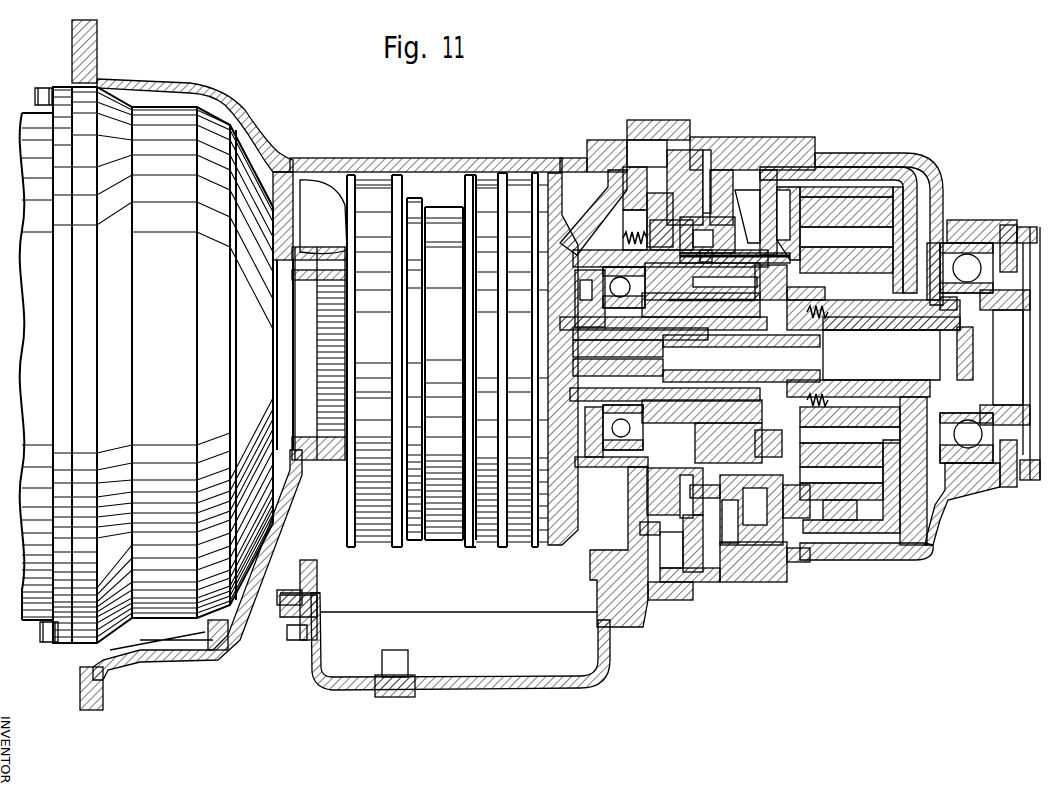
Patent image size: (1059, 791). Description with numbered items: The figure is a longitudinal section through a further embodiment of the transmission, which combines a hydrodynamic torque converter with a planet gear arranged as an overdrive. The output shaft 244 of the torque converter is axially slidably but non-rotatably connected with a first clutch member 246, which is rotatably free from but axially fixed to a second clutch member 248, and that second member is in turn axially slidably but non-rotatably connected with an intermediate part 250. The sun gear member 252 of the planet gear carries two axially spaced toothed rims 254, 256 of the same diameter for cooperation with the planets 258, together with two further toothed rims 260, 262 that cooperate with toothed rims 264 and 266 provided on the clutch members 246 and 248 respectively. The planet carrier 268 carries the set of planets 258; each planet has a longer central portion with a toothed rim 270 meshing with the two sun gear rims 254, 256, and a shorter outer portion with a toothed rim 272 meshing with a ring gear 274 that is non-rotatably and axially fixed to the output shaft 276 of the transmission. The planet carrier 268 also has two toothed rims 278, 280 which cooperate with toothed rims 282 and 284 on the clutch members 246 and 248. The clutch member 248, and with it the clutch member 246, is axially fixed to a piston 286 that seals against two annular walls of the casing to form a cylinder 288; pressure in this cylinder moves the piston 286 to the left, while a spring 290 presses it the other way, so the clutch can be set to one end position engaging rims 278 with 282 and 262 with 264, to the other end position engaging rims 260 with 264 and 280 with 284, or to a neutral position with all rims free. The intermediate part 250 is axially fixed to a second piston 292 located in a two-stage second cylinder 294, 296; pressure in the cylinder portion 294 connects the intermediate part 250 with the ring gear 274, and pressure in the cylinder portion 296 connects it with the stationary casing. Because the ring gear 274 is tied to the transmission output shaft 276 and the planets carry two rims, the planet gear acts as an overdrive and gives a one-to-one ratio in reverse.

The output shaft of the torque converter 244 is at (717, 362).
The first clutch member 246 is at (680, 450).
The second clutch member 248 is at (625, 487).
The intermediate part 250 is at (807, 537).
The sun gear member 252 is at (893, 270).
The toothed rim of the sun gear 254 is at (828, 248).
The toothed rim of the sun gear 256 is at (872, 244).
The planets 258 is at (903, 203).
The toothed rim of the sun gear 260 is at (740, 337).
The toothed rim of the sun gear 262 is at (703, 280).
The toothed rim of the first clutch member 264 is at (753, 430).
The toothed rim of the second clutch member 266 is at (823, 379).
The planet carrier 268 is at (883, 273).
The toothed rim of the planet central portion 270 is at (863, 220).
The toothed rim of the planet outer portion 272 is at (840, 273).
The ring gear 274 is at (847, 180).
The output shaft of the transmission 276 is at (993, 313).
The toothed rim of the planet carrier 278 is at (760, 335).
The toothed rim of the planet carrier 280 is at (840, 475).
The toothed rim of the first clutch member 282 is at (737, 323).
The toothed rim of the second clutch member 284 is at (773, 245).
The piston 286 is at (604, 188).
The cylinder 288 is at (673, 223).
The spring 290 is at (623, 238).
The second piston 292 is at (708, 565).
The cylinder portion 294 is at (648, 567).
The cylinder portion 296 is at (742, 580).